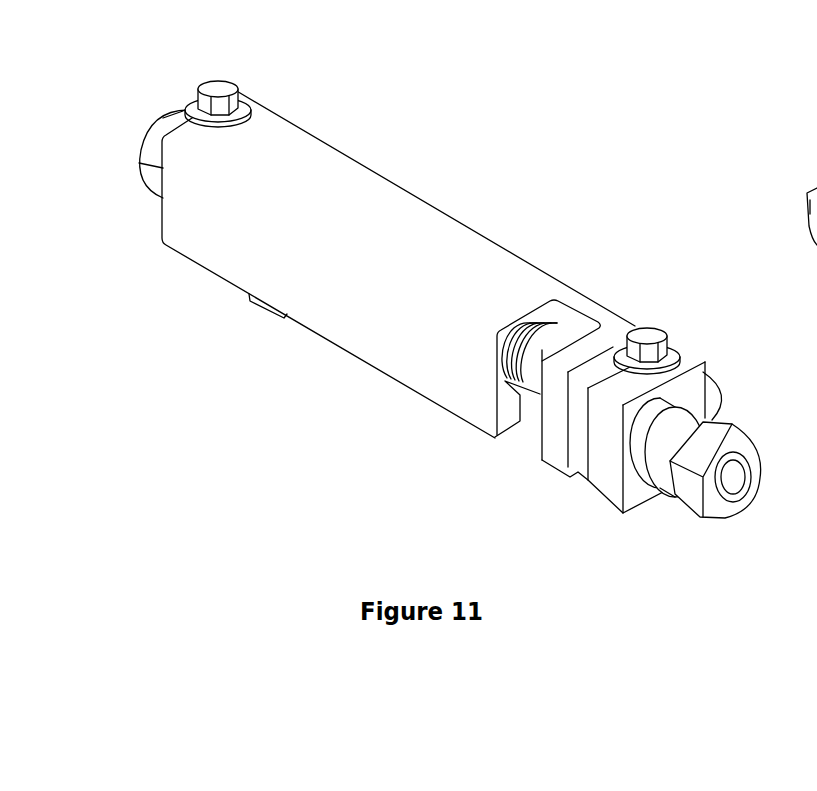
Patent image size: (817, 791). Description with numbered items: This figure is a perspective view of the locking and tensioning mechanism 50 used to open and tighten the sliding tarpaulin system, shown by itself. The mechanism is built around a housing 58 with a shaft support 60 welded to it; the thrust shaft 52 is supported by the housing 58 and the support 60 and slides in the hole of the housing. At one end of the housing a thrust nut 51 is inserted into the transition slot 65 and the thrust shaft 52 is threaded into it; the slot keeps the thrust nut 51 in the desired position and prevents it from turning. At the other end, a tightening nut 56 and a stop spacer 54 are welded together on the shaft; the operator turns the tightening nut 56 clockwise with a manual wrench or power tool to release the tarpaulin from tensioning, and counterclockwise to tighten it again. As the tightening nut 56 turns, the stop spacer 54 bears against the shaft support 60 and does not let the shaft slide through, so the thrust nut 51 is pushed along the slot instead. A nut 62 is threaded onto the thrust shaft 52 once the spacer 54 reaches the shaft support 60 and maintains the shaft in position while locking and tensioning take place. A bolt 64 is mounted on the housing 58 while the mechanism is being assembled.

The clamp assembly 50 is at (476, 279).
The thrust nut 51 is at (262, 303).
The thrust shaft 52 is at (530, 350).
The stop spacer 54 is at (663, 408).
The tightening nut 56 is at (702, 442).
The housing 58 is at (318, 165).
The shaft support 60 is at (609, 467).
The nut 62 is at (152, 145).
The bolt 64 is at (213, 88).
The transition slot 65 is at (523, 445).